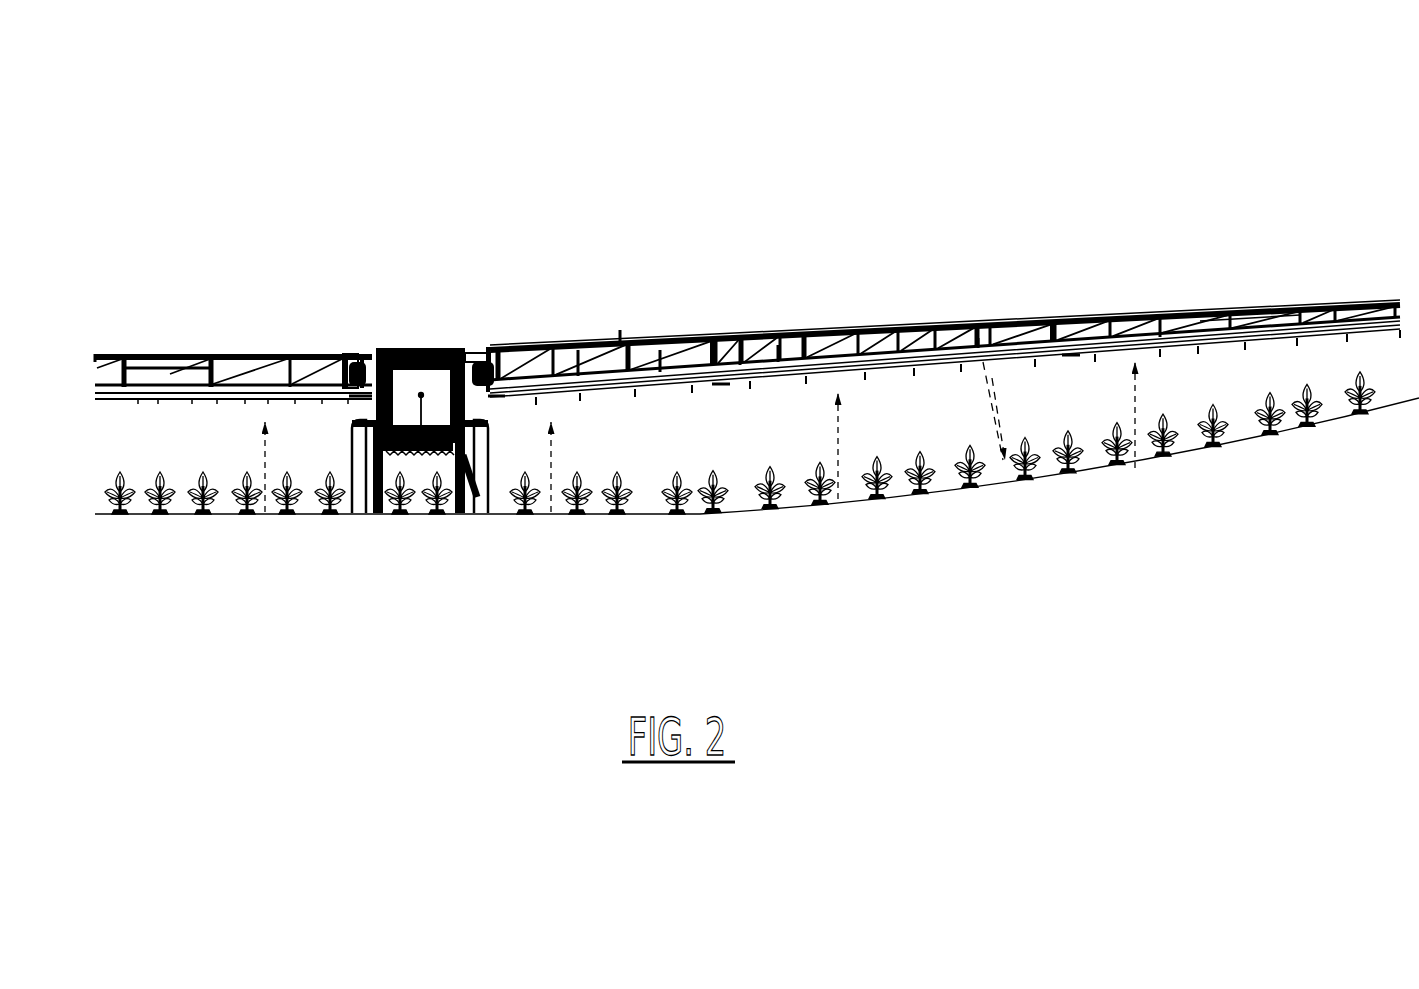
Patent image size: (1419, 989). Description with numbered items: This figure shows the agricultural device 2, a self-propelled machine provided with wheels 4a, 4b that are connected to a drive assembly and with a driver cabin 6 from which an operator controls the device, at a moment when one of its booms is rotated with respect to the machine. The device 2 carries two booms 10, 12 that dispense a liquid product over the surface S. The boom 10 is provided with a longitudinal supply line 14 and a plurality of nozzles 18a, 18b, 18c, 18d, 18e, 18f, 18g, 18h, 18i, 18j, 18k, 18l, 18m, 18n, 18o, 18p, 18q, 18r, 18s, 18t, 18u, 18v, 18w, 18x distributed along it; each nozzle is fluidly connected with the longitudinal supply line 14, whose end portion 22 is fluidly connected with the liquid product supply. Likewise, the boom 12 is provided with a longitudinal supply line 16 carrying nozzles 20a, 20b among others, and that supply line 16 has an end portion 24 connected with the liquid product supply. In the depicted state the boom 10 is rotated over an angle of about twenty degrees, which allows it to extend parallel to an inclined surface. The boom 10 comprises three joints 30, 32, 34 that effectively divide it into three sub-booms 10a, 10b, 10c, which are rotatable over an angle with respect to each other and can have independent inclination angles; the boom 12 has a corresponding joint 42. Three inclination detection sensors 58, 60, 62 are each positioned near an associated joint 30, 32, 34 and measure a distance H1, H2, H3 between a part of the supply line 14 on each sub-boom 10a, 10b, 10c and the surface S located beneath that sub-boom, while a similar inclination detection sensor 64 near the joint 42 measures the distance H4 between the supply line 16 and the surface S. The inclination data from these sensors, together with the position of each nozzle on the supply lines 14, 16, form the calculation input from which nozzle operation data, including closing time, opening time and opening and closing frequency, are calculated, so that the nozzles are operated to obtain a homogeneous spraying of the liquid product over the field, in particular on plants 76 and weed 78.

The agricultural device 2 is at (567, 150).
The wheel 4a is at (362, 514).
The wheel 4b is at (470, 514).
The driver cabin 6 is at (410, 377).
The boom 10 is at (920, 325).
The sub-boom 10a is at (548, 335).
The sub-boom 10b is at (883, 321).
The sub-boom 10c is at (1270, 292).
The boom 12 is at (237, 348).
The longitudinal supply line 14 is at (1215, 328).
The longitudinal supply line 16 is at (165, 354).
The nozzle 18a is at (536, 410).
The nozzle 18b is at (580, 405).
The nozzle 18c is at (635, 401).
The nozzle 18d is at (692, 397).
The nozzle 18e is at (750, 393).
The nozzle 18f is at (806, 388).
The nozzle 18g is at (865, 384).
The nozzle 18h is at (914, 380).
The nozzle 18i is at (961, 376).
The nozzle 18j is at (1035, 371).
The nozzle 18k is at (1095, 366).
The nozzle 18l is at (1160, 361).
The nozzle 18m is at (1198, 358).
The nozzle 18n is at (1245, 354).
The nozzle 18o is at (1297, 349).
The nozzle 18p is at (1347, 344).
The nozzle 18q is at (1400, 339).
The nozzle 18r is at (577, 349).
The nozzle 18s is at (620, 330).
The nozzle 18t is at (660, 350).
The nozzle 18u is at (740, 335).
The nozzle 18v is at (778, 345).
The nozzle 18w is at (977, 340).
The nozzle 18x is at (1160, 333).
The nozzle 20a is at (244, 410).
The nozzle 20b is at (150, 413).
The end portion 22 is at (477, 345).
The end portion 24 is at (364, 350).
The joint 30 is at (490, 343).
The joint 32 is at (712, 338).
The joint 34 is at (1051, 312).
The joint 42 is at (355, 353).
The inclination detection sensor 58 is at (498, 408).
The inclination detection sensor 60 is at (720, 402).
The inclination detection sensor 62 is at (1069, 370).
The inclination detection sensor 64 is at (348, 410).
The plants 76 is at (967, 484).
The weed 78 is at (1000, 470).
The distance H1 is at (550, 514).
The distance H2 is at (845, 501).
The distance H3 is at (1140, 468).
The distance H4 is at (268, 514).
The surface S is at (1240, 558).